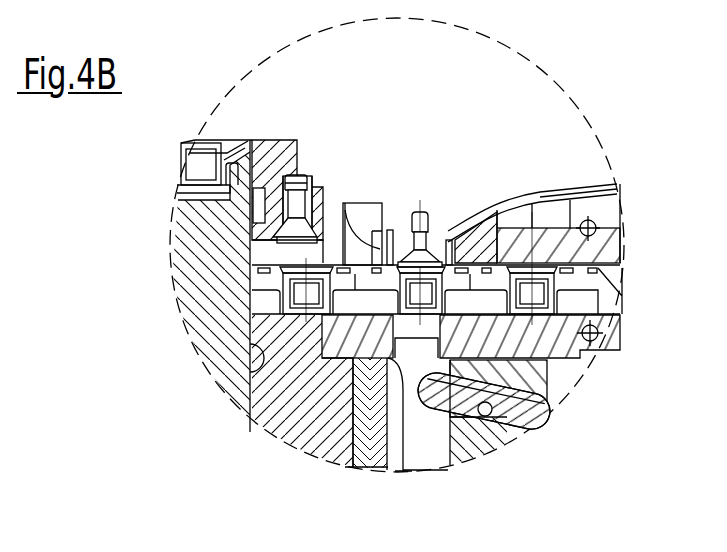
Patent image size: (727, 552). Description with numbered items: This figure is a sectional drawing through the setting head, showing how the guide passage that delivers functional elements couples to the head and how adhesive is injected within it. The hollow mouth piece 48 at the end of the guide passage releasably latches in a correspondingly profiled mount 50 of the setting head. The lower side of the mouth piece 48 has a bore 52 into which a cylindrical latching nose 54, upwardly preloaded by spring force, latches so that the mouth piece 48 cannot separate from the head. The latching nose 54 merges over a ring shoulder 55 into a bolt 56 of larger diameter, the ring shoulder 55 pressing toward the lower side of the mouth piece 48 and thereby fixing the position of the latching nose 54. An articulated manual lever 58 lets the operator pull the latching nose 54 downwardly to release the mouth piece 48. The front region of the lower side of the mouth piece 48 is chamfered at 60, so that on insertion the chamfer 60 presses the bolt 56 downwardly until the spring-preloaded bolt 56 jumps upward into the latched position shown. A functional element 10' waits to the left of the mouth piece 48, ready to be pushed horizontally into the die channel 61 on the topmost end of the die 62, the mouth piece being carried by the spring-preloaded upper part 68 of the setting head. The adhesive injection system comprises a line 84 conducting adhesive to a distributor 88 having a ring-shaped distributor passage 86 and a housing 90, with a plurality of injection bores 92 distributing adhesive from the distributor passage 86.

The functional element 10' is at (230, 314).
The mouth piece 48 is at (608, 245).
The mount 50 is at (330, 352).
The bore 52 is at (428, 325).
The latching nose 54 is at (535, 373).
The ring shoulder 55 is at (407, 398).
The bolt 56 is at (430, 453).
The articulated manual lever 58 is at (517, 423).
The chamfer 60 is at (341, 356).
The die channel 61 is at (238, 402).
The die 62 is at (200, 257).
The upper part 68 is at (468, 450).
The line 84 is at (538, 196).
The distributor passage 86 is at (398, 210).
The distributor 88 is at (374, 198).
The housing 90 is at (361, 203).
The injection bores 92 is at (348, 201).